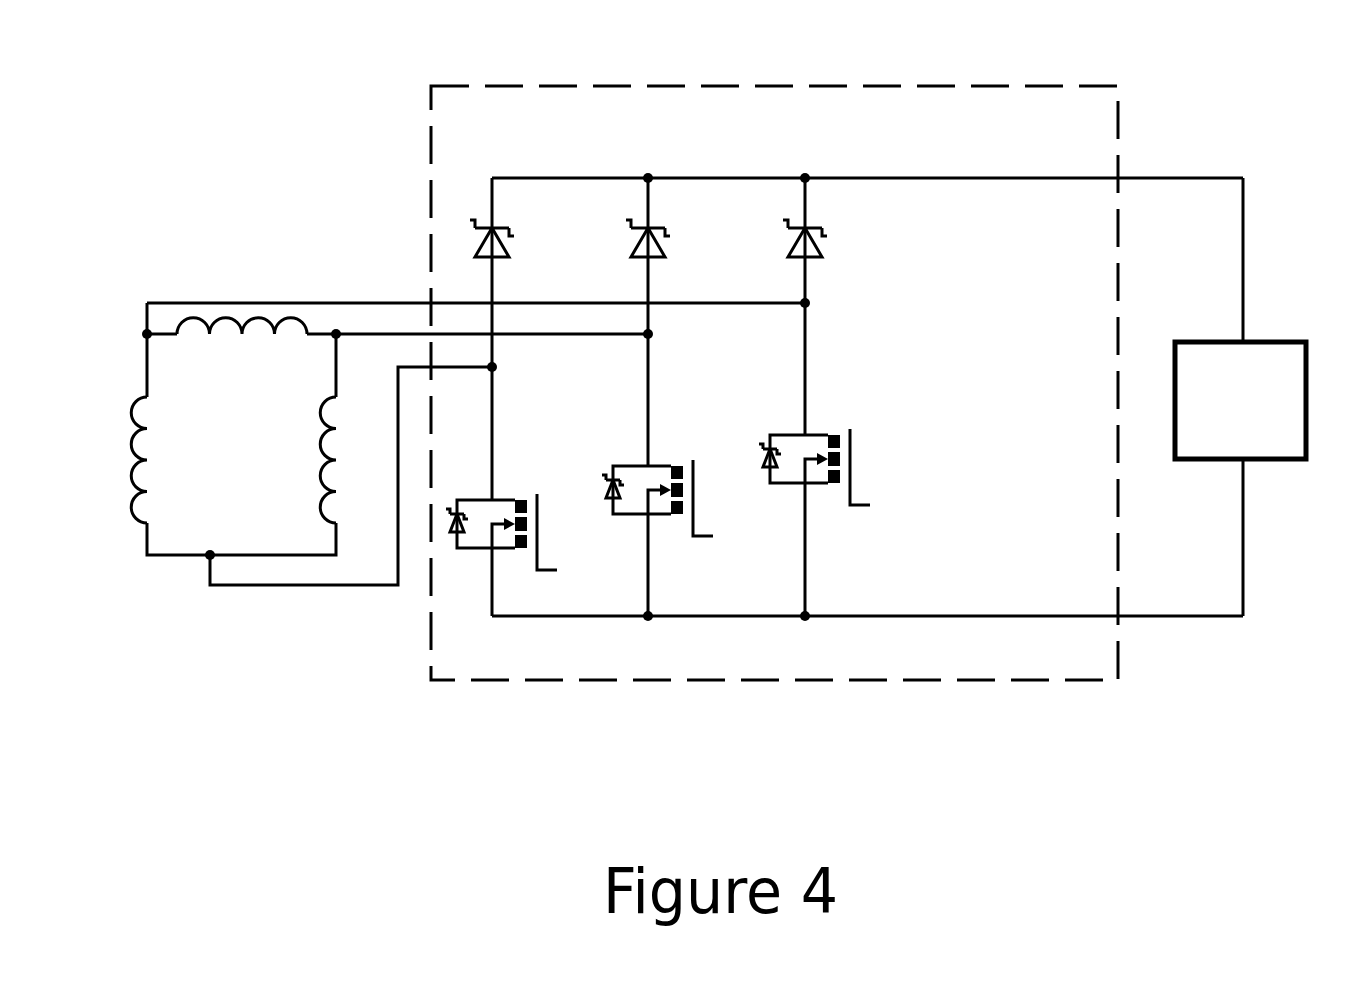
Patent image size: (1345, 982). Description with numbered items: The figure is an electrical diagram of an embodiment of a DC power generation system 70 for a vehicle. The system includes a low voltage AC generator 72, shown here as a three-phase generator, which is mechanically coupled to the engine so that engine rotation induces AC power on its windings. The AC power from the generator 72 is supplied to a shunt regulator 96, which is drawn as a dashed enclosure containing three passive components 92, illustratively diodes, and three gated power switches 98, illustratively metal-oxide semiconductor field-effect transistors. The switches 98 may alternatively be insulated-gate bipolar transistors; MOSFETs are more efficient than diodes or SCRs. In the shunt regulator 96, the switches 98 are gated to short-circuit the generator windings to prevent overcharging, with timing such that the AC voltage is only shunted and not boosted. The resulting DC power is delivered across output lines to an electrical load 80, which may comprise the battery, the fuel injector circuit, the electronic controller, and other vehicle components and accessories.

The DC power generation system 70 is at (248, 152).
The low voltage AC generator 72 is at (250, 305).
The electrical load 80 is at (1270, 342).
The passive components 92 is at (825, 226).
The shunt regulator 96 is at (428, 152).
The gated power switches 98 is at (857, 452).